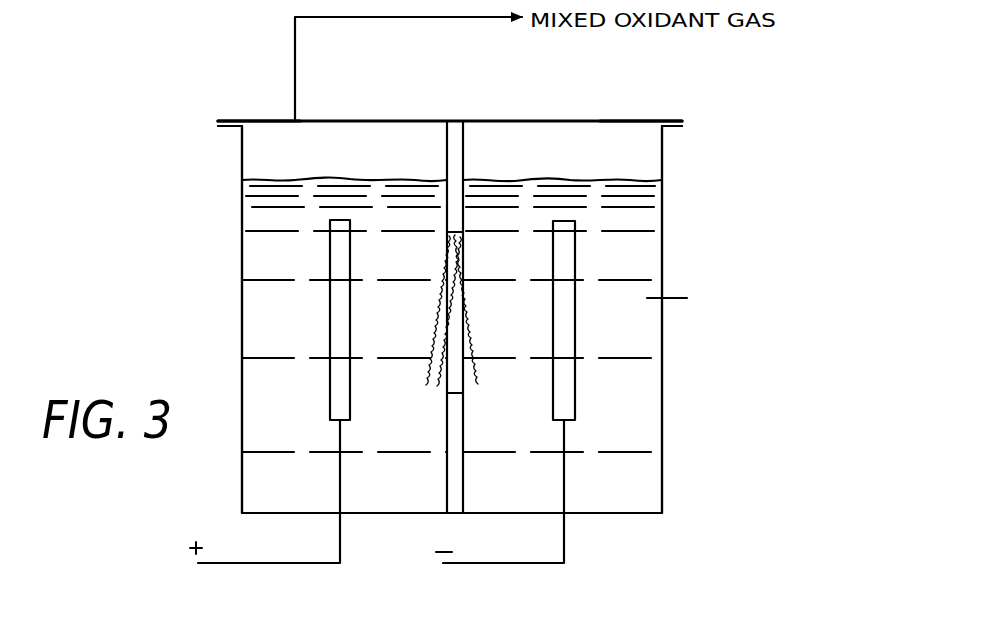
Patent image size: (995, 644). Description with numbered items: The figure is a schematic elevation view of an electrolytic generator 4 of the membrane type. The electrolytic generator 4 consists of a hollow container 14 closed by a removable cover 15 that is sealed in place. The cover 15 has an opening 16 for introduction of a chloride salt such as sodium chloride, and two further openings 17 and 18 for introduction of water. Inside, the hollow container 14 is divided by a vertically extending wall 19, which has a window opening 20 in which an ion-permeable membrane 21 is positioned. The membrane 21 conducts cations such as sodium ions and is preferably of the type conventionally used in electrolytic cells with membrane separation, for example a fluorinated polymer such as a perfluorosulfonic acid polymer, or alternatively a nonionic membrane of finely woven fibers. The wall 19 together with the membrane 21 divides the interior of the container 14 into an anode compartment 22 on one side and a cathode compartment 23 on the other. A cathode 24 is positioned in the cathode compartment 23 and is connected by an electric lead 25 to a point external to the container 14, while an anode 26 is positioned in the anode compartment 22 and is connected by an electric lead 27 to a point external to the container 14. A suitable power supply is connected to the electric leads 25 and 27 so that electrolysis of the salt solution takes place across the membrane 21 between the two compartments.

The electrolytic generator 4 is at (668, 418).
The hollow container 14 is at (242, 328).
The removable cover 15 is at (640, 120).
The opening 16 is at (250, 119).
The opening 17 is at (360, 118).
The opening 18 is at (512, 118).
The vertically extending wall 19 is at (445, 478).
The window opening 20 is at (463, 380).
The ion-permeable membrane 21 is at (465, 257).
The anode compartment 22 is at (242, 247).
The cathode compartment 23 is at (655, 345).
The cathode 24 is at (572, 312).
The electric lead 25 is at (530, 565).
The anode 26 is at (348, 303).
The electric lead 27 is at (268, 564).